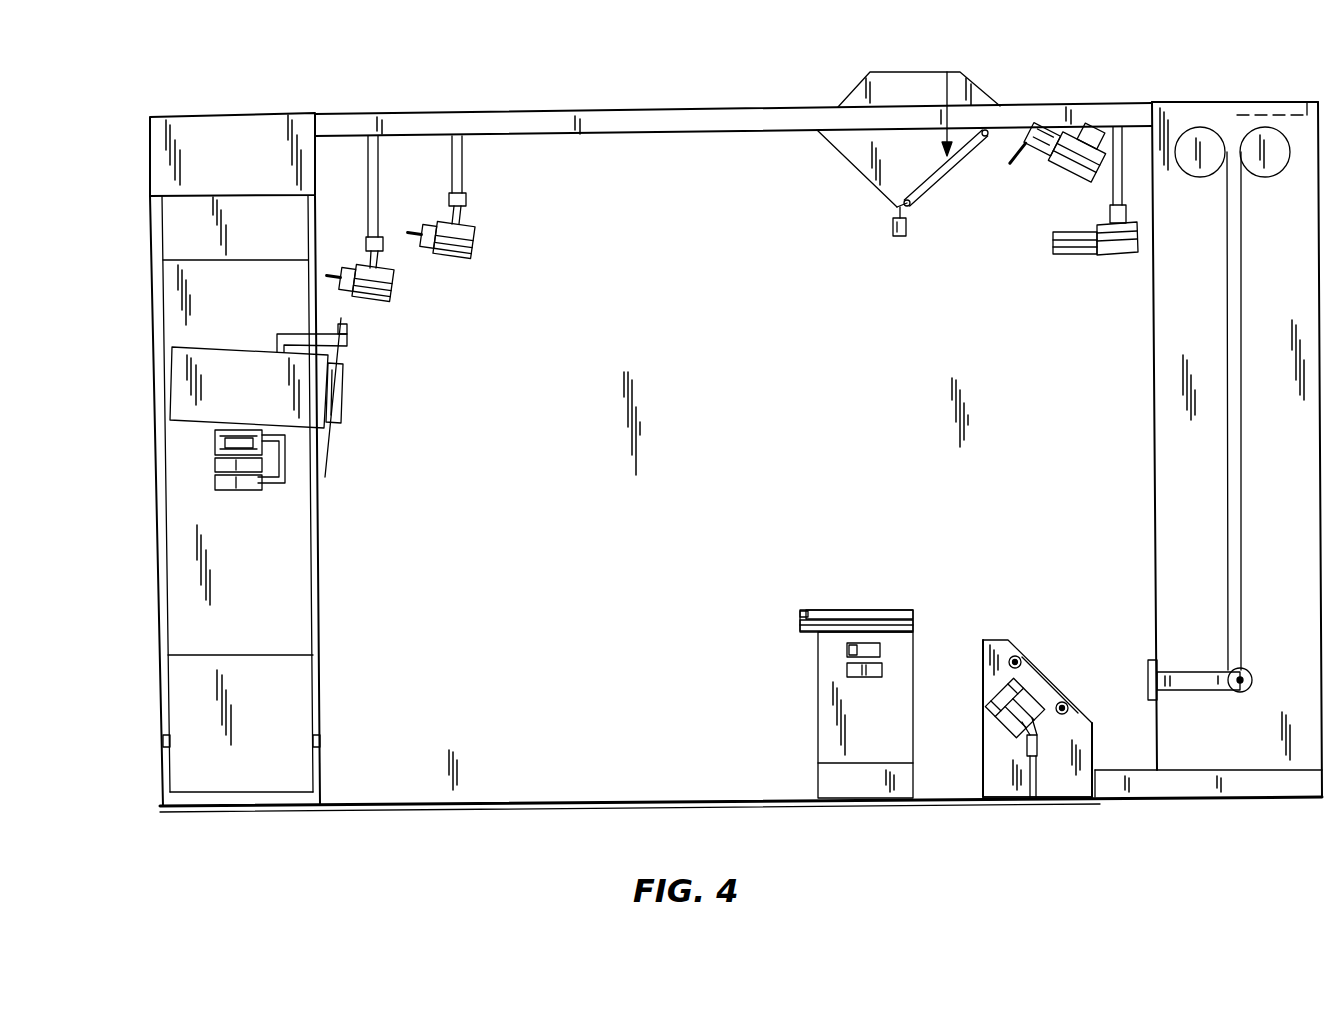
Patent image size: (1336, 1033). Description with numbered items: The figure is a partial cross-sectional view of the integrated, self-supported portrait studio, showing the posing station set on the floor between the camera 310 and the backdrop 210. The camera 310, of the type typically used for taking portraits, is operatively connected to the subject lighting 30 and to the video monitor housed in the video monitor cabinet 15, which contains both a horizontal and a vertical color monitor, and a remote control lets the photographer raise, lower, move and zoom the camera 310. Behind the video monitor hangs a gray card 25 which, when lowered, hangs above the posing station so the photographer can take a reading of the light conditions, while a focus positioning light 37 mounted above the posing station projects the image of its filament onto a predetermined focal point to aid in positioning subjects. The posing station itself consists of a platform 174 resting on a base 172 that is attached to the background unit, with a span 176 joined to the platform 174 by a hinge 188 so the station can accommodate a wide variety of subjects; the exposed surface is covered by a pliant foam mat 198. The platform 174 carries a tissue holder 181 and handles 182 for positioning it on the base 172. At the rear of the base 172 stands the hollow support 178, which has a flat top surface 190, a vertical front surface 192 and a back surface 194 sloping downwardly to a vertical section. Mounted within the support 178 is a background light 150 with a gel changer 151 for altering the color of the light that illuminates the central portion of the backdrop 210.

The video monitor cabinet 15 is at (973, 95).
The gray card 25 is at (930, 200).
The lighting 30 is at (380, 300).
The focus positioning light 37 is at (906, 228).
The background light 150 is at (990, 722).
The gel changer 151 is at (1022, 660).
The base 172 is at (940, 805).
The platform 174 is at (822, 720).
The span 176 is at (820, 612).
The support 178 is at (1058, 790).
The holder 181 is at (845, 668).
The handle 182 is at (845, 650).
The hinge 188 is at (915, 622).
The top surface 190 is at (990, 640).
The front surface 192 is at (983, 698).
The back surface 194 is at (1066, 700).
The foam mat 198 is at (800, 623).
The backdrop 210 is at (1158, 375).
The camera 310 is at (318, 427).